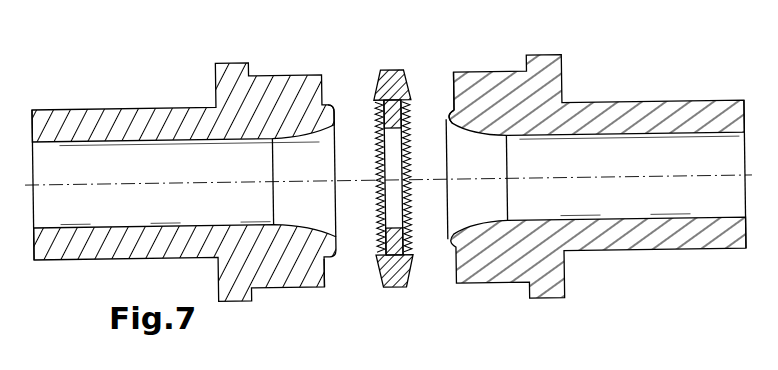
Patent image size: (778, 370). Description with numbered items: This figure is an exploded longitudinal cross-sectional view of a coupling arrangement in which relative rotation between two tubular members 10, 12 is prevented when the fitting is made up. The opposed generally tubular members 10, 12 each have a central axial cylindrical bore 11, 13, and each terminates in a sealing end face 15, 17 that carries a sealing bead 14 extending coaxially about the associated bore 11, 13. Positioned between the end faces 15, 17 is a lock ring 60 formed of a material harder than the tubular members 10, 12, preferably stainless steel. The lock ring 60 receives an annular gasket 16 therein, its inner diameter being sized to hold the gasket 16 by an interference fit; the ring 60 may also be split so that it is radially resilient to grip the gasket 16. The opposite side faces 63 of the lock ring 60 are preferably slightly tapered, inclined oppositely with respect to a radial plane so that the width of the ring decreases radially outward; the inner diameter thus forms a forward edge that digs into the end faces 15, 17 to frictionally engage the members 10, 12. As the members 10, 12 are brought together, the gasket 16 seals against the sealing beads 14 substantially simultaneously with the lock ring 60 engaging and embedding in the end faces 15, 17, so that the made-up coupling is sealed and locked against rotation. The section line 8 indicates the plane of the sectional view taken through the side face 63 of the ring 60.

The section line 8- 8 is at (423, 35).
The tubular member 10 is at (165, 89).
The central axial cylindrical bore 11 is at (60, 218).
The tubular member 12 is at (618, 84).
The central axial cylindrical bore 13 is at (733, 216).
The sealing bead 14 is at (336, 115).
The sealing end face 15 is at (326, 272).
The annular gasket 16 is at (412, 238).
The sealing end face 17 is at (455, 90).
The lock ring 60 is at (405, 171).
The side face 63 is at (375, 97).